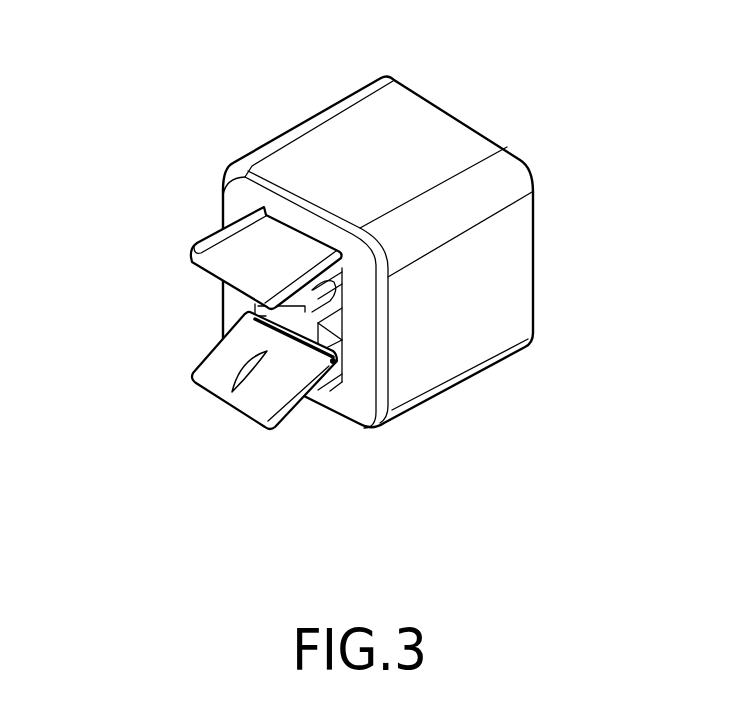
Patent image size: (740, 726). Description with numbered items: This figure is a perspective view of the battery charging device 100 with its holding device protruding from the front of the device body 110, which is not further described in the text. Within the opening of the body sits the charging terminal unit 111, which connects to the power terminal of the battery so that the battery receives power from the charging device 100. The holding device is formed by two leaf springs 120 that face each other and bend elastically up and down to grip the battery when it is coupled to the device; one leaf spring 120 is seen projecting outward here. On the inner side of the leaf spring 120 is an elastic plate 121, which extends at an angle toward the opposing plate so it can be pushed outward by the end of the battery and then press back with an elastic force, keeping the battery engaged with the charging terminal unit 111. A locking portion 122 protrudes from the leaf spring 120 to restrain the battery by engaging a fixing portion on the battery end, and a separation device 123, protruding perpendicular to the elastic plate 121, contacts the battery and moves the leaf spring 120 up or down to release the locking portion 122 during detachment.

The battery charging device 100 is at (300, 77).
The housing 110 is at (435, 125).
The charging terminal unit 111 is at (340, 325).
The leaf spring 120 is at (217, 271).
The elastic plate 121 is at (286, 419).
The locking portion 122 is at (343, 353).
The separation device 123 is at (248, 377).